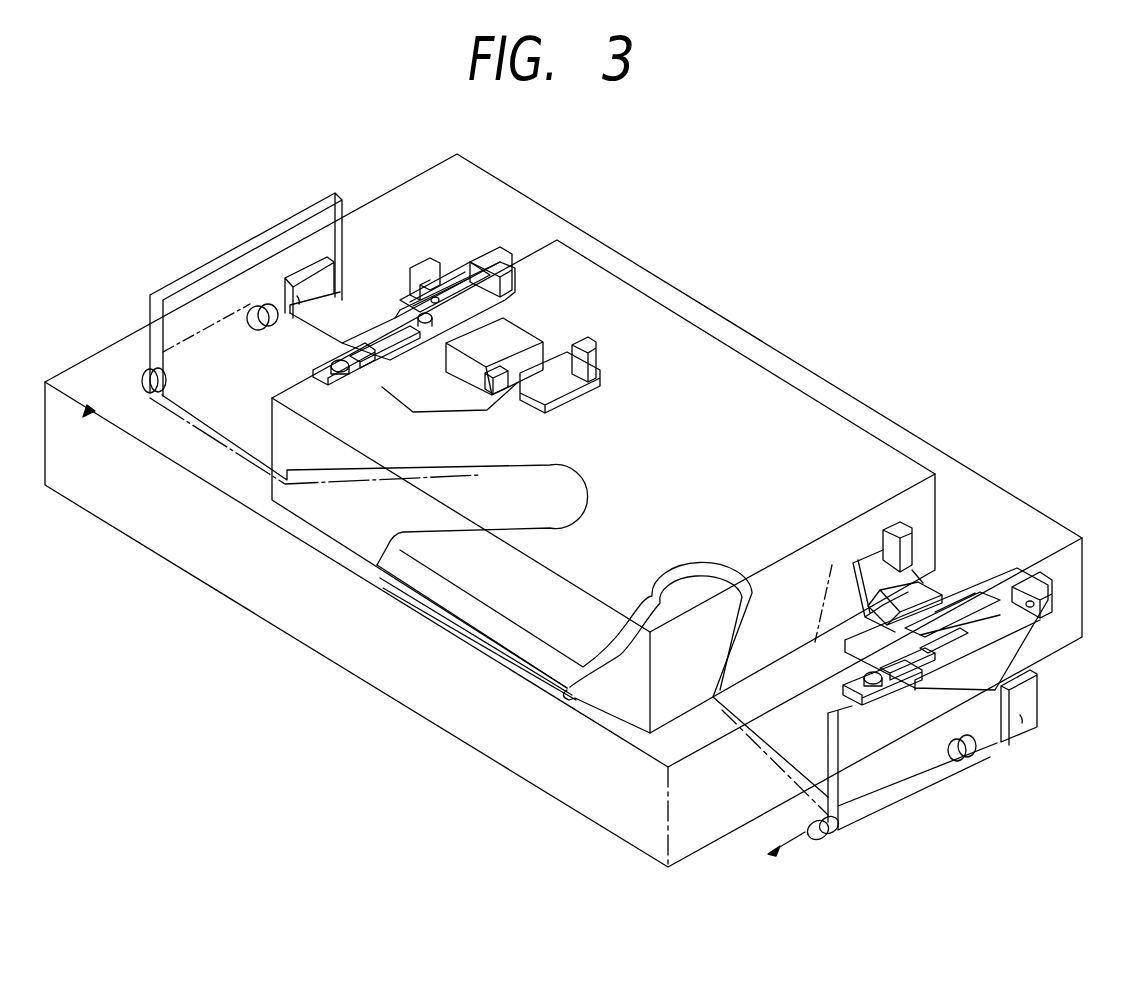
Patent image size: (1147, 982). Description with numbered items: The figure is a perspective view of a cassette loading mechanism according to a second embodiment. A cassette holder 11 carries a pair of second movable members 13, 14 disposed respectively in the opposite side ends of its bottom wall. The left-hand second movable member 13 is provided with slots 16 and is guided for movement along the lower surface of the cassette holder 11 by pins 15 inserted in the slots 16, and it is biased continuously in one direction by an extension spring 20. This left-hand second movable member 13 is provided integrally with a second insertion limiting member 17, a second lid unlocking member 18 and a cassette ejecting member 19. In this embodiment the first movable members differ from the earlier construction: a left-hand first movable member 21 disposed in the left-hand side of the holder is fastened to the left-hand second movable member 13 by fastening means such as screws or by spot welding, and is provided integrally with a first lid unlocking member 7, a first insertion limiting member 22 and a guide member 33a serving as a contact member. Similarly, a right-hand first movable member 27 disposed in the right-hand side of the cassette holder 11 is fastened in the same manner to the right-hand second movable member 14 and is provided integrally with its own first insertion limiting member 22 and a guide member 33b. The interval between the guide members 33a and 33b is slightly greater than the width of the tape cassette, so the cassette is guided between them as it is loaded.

The first lid unlocking member 7 is at (507, 387).
The cassette holder 11 is at (682, 478).
The left-hand second movable member 13 is at (348, 312).
The right-hand second movable member 14 is at (968, 762).
The pins 15 is at (323, 357).
The slots 16 is at (372, 372).
The second insertion limiting member 17 is at (492, 260).
The second lid unlocking member 18 is at (421, 272).
The cassette ejecting member 19 is at (310, 280).
The extension spring 20 is at (142, 375).
The left-hand first movable member 21 is at (568, 383).
The first insertion limiting member 22 is at (590, 343).
The right-hand first movable member 27 is at (867, 563).
The guide member 33a is at (497, 343).
The guide member 33b is at (923, 587).